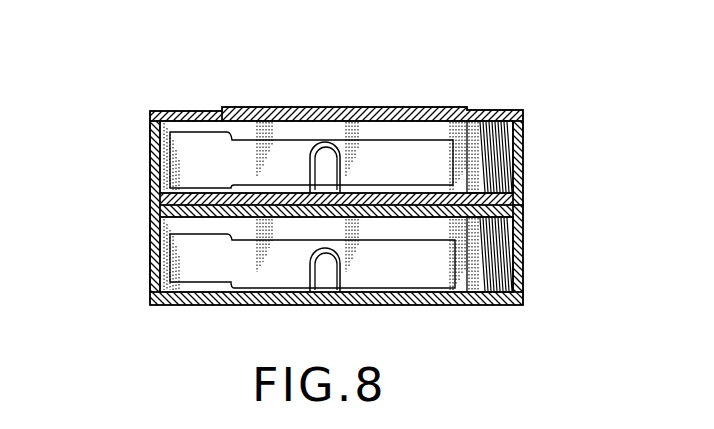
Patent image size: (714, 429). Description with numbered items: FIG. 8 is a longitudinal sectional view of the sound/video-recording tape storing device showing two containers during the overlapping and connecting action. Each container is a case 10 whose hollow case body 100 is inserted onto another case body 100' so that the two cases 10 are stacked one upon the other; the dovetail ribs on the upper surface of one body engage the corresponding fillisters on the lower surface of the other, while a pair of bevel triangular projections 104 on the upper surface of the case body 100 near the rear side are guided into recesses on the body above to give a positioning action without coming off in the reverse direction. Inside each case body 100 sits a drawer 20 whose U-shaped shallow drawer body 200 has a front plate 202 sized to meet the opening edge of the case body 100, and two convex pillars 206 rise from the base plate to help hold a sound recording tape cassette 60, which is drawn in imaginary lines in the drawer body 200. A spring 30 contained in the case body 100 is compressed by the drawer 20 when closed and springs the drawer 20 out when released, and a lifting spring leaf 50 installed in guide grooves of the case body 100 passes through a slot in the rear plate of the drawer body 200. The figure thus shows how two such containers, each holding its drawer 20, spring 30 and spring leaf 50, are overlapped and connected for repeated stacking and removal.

The case 10 is at (194, 107).
The drawer 20 is at (145, 170).
The spring 30 is at (490, 121).
The lifting spring leaf 50 is at (152, 193).
The sound recording tape cassette 60 is at (258, 128).
The case body 100 is at (559, 163).
The case body 100' is at (559, 248).
The bevel triangular projections 104 is at (467, 108).
The drawer body 200 is at (148, 156).
The front plate 202 is at (152, 133).
The convex pillars 206 is at (331, 146).